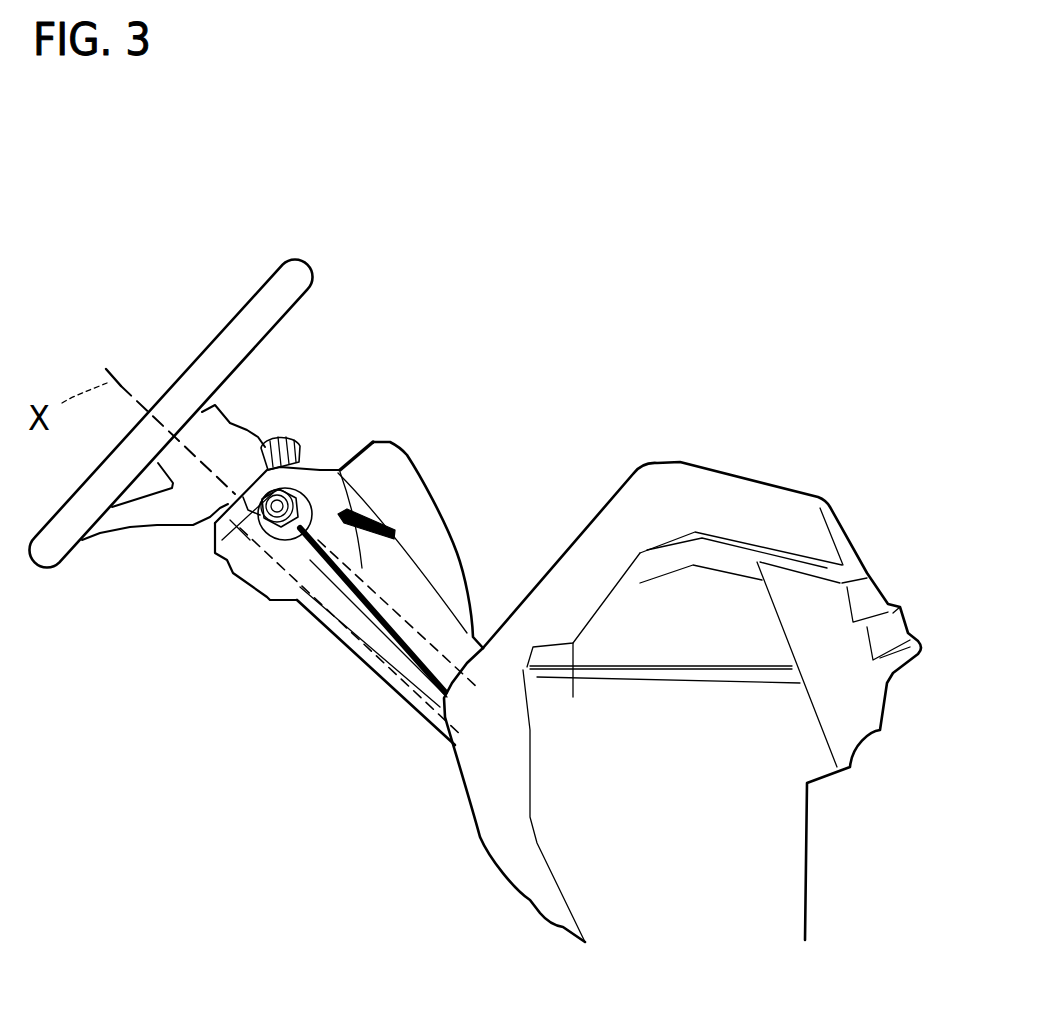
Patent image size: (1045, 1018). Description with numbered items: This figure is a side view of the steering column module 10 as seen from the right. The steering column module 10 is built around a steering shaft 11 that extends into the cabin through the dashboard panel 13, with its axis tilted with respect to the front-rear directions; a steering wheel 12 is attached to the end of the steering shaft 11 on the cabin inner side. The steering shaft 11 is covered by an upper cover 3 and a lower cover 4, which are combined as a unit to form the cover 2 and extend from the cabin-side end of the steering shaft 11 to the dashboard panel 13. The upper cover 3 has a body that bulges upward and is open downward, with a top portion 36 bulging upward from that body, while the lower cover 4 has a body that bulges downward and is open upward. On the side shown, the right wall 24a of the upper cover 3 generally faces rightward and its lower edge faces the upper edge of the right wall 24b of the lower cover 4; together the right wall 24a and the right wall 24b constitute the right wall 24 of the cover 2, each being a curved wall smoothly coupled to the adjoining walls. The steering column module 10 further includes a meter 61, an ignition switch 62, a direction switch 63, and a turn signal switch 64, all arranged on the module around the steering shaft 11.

The cover 2 is at (483, 533).
The upper cover 3 is at (440, 510).
The lower cover 4 is at (320, 622).
The steering column module 10 is at (485, 283).
The steering shaft 11 is at (277, 573).
The steering wheel 12 is at (241, 301).
The dashboard panel 13 is at (657, 462).
The right wall 24 is at (362, 681).
The right wall 24a is at (417, 638).
The right wall 24b is at (357, 638).
The top portion 36 is at (412, 458).
The meter 61 is at (342, 466).
The ignition switch 62 is at (263, 523).
The direction switch 63 is at (353, 510).
The turn signal switch 64 is at (275, 432).